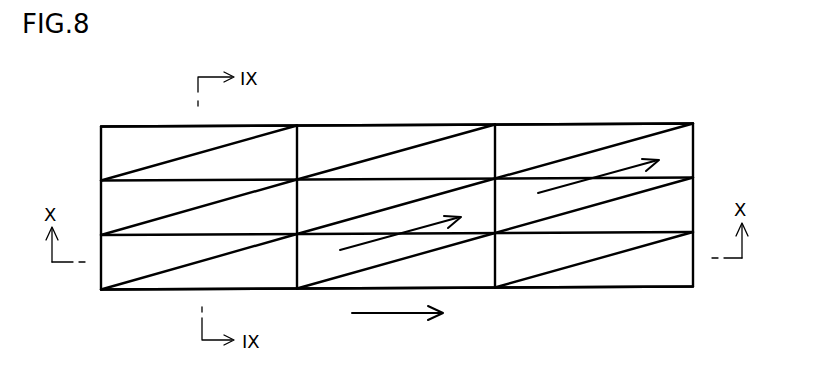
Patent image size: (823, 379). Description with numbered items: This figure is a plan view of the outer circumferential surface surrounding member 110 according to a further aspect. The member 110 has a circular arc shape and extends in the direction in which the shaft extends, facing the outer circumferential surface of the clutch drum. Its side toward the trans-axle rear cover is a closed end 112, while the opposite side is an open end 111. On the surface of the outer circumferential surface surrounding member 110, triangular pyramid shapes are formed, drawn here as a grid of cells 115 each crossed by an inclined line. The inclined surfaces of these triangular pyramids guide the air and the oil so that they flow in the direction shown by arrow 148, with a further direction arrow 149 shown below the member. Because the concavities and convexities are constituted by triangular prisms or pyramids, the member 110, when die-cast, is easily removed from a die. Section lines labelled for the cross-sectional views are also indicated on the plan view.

The outer circumferential surface surrounding member 110 is at (100, 148).
The open end 111 is at (702, 122).
The closed end 112 is at (702, 286).
The cell 115 is at (276, 147).
The arrow 148 is at (418, 223).
The direction arrow 149 is at (383, 316).